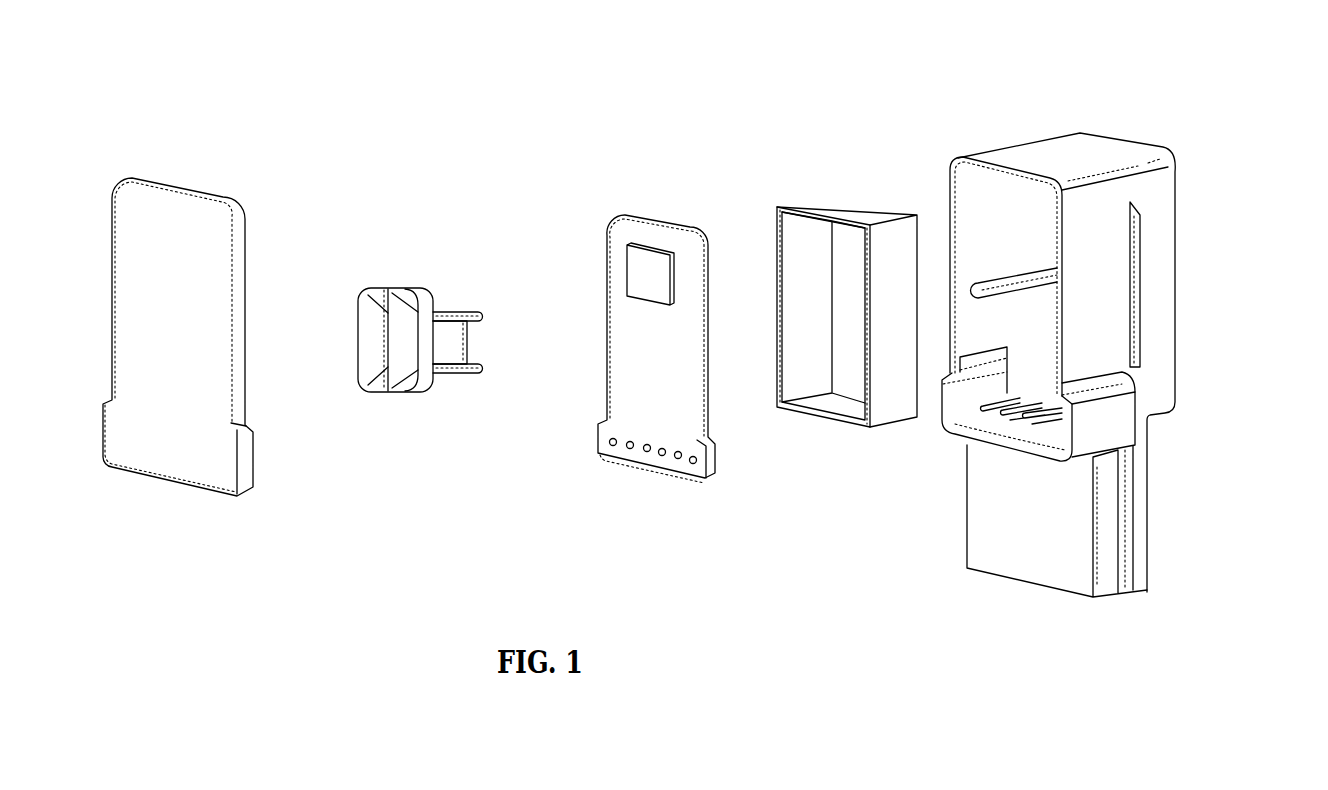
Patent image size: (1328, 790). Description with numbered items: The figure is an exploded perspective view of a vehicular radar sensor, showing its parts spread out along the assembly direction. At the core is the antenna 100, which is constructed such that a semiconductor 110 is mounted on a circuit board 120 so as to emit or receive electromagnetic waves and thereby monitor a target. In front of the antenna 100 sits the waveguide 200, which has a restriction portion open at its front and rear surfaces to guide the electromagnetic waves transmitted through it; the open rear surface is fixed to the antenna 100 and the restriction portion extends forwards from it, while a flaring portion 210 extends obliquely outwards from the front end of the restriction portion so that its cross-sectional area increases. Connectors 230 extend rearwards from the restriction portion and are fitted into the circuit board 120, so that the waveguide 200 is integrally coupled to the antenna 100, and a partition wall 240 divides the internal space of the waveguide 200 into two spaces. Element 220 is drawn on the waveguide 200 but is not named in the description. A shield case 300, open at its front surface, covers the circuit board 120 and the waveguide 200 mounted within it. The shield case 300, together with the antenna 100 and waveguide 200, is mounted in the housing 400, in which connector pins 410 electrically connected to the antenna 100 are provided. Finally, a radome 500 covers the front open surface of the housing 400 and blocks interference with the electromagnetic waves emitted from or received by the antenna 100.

The antenna 100 is at (612, 332).
The semiconductor 110 is at (640, 271).
The circuit board 120 is at (668, 463).
The waveguide 200 is at (429, 336).
The flaring portion 210 is at (387, 393).
The connector stem 220 is at (450, 367).
The connectors 230 is at (483, 371).
The partition wall 240 is at (387, 332).
The shield case 300 is at (843, 210).
The housing 400 is at (1121, 332).
The connector pins 410 is at (1068, 432).
The radome 500 is at (165, 207).